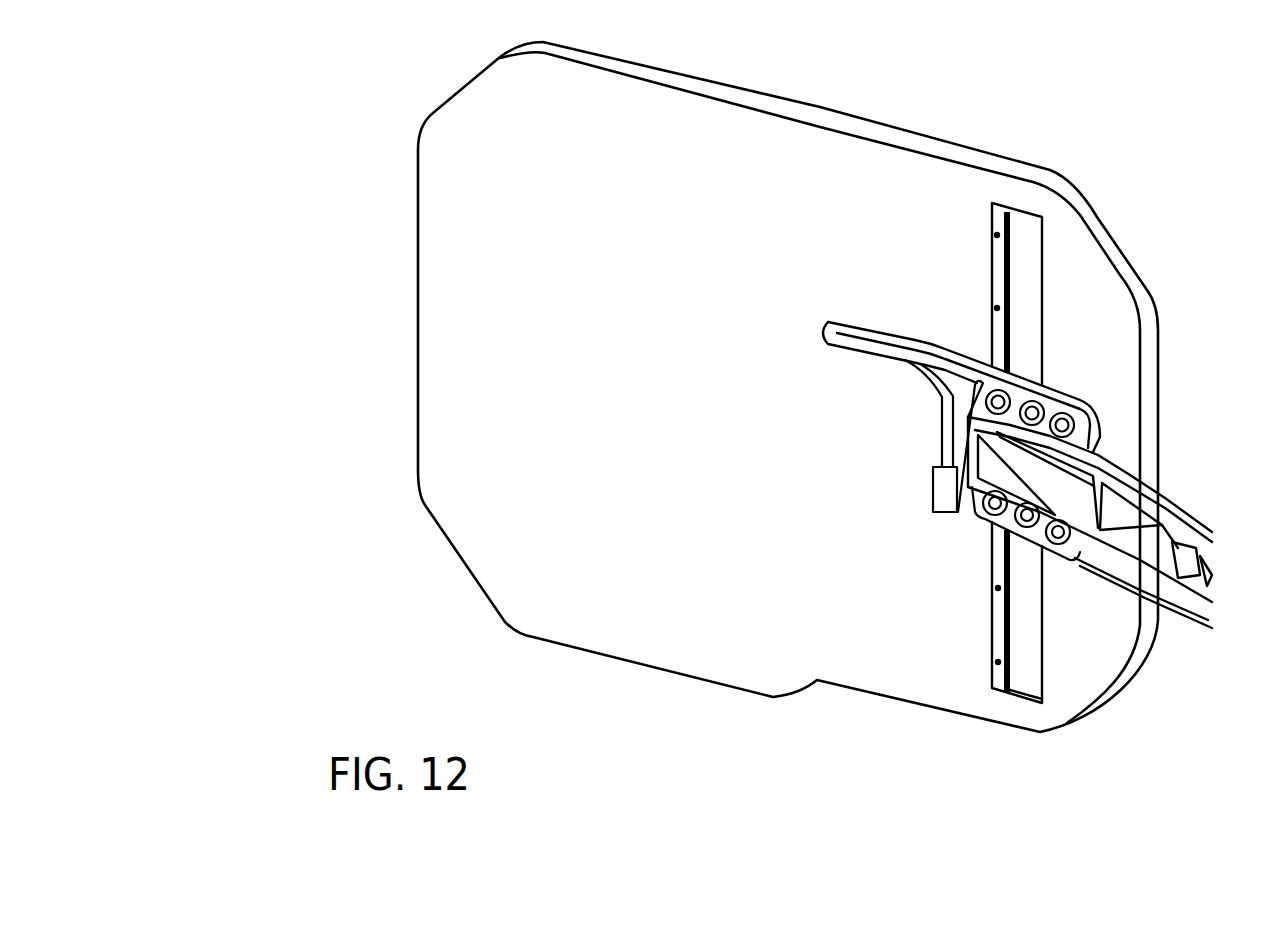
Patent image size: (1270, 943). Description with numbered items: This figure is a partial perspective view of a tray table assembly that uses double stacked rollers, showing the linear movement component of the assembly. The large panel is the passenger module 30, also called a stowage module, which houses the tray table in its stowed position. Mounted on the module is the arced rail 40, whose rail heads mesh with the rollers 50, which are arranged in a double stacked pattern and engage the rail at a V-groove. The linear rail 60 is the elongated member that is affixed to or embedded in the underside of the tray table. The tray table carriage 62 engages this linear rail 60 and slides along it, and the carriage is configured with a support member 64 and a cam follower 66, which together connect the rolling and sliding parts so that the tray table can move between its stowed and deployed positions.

The passenger module 30 is at (635, 612).
The arced rail 40 is at (1177, 533).
The rollers 50 is at (1077, 430).
The linear rail 60 is at (1027, 287).
The tray table carriage 62 is at (950, 513).
The support member 64 is at (933, 367).
The cam follower 66 is at (828, 322).